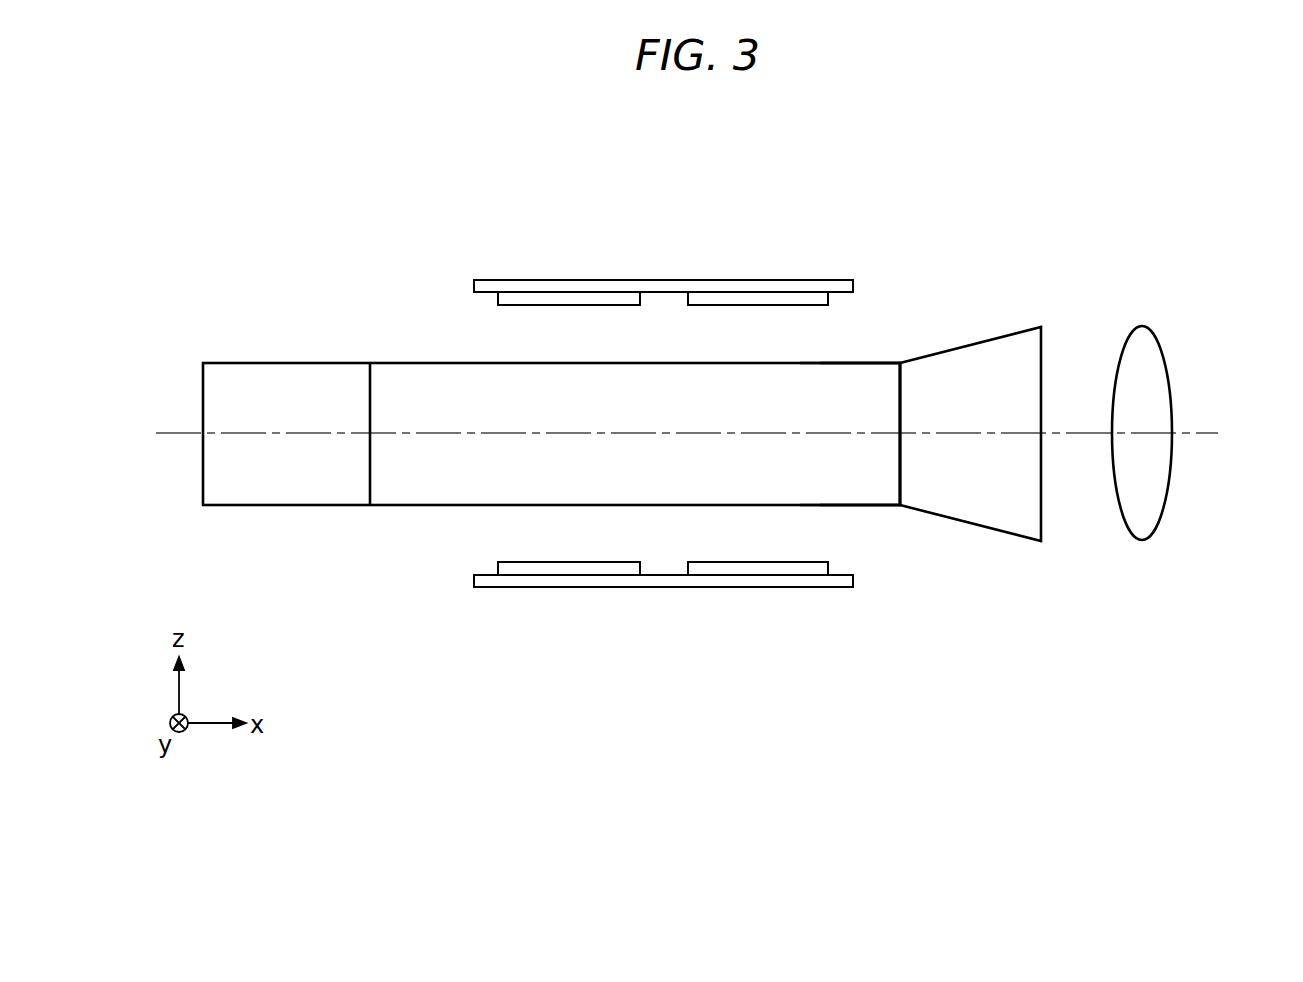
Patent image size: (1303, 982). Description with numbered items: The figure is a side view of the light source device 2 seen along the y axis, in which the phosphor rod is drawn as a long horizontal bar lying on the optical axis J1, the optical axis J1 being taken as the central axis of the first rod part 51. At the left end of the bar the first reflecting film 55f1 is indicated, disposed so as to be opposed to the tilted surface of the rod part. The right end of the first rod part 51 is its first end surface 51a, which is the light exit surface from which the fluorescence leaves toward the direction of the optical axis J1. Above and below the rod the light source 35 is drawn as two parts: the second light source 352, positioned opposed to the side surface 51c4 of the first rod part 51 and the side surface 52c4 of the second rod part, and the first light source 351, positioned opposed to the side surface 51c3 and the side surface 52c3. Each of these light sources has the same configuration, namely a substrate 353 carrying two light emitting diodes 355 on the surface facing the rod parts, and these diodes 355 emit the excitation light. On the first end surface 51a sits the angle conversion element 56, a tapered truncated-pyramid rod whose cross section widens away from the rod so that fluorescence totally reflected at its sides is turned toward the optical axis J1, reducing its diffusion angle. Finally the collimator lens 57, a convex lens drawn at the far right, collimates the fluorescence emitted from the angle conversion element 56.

The light source device 2 is at (998, 176).
The optical axis J1 is at (1207, 432).
The first rod part 51 is at (418, 498).
The first reflecting film 55f1 is at (277, 498).
The first end surface 51a is at (900, 475).
The side surface 51c4 is at (858, 360).
The side surface 52c4 is at (888, 326).
The side surface 51c3 is at (857, 507).
The side surface 52c3 is at (877, 576).
The angle conversion element 56 is at (1001, 522).
The collimator lens 57 is at (1143, 533).
The light source 35 is at (663, 436).
The second light source 352 is at (537, 278).
The first light source 351 is at (537, 590).
The light emitting diode 355 is at (585, 298).
The substrate 353 is at (667, 288).